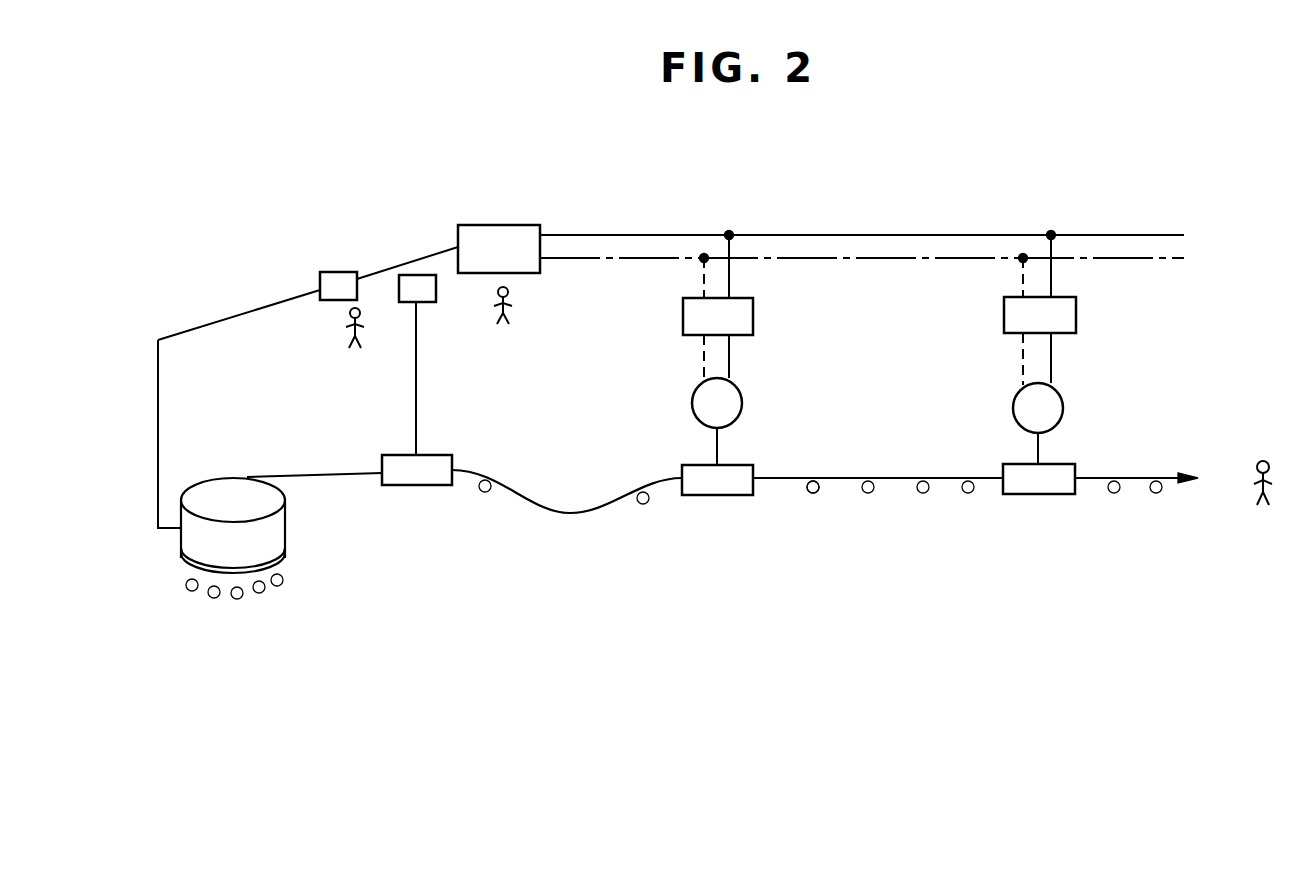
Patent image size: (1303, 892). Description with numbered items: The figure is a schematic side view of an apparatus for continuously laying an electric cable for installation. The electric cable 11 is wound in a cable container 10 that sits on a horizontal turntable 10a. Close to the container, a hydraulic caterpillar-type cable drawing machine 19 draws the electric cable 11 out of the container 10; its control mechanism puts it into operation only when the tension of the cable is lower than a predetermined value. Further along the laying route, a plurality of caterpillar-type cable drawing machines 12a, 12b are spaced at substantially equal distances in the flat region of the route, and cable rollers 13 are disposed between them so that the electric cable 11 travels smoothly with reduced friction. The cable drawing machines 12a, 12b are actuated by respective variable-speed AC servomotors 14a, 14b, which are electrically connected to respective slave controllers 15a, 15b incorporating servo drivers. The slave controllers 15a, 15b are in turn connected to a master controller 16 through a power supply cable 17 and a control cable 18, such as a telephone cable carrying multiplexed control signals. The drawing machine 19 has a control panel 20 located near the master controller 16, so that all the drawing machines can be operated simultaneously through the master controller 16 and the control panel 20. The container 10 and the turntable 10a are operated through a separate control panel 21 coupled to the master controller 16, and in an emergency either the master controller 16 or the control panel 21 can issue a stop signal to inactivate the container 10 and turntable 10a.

The cable container 10 is at (258, 562).
The horizontal turntable 10a is at (185, 568).
The electric cable 11 is at (335, 475).
The caterpillar-type cable drawing machine 12a is at (712, 496).
The caterpillar-type cable drawing machine 12b is at (1022, 495).
The cable rollers 13 is at (818, 492).
The variable-speed AC servomotor 14a is at (742, 411).
The variable-speed AC servomotor 14b is at (1063, 411).
The slave controller 15a is at (687, 320).
The slave controller 15b is at (1008, 318).
The master controller 16 is at (500, 227).
The power supply cable 17 is at (618, 234).
The control cable 18 is at (660, 261).
The hydraulic caterpillar-type cable drawing machine 19 is at (418, 486).
The control panel 20 is at (414, 276).
The control panel 21 is at (322, 284).